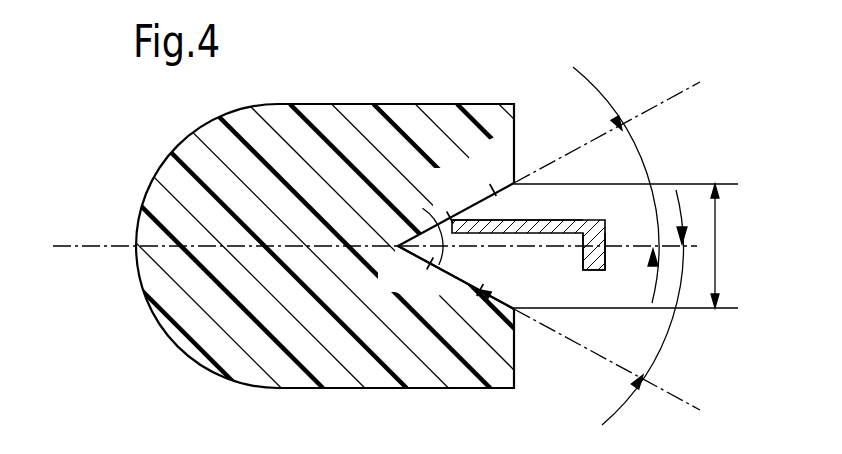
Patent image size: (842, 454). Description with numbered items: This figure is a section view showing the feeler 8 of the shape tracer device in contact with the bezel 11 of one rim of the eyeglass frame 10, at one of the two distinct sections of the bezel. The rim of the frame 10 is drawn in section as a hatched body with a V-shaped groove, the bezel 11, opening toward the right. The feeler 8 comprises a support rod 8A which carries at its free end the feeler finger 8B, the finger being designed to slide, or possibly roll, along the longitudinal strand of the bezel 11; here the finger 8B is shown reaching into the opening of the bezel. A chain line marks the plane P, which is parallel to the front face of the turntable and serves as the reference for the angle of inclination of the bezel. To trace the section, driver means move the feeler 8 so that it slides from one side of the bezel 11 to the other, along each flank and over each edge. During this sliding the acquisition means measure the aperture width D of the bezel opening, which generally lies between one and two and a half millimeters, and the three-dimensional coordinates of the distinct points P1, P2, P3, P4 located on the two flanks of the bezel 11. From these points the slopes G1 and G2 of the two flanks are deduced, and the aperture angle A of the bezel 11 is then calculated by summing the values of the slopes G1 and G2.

The eyeglass frame 10 is at (160, 327).
The bezel 11 is at (516, 311).
The feeler 8 is at (599, 214).
The support rod 8A is at (618, 258).
The feeler finger 8B is at (558, 216).
The plane P is at (87, 246).
The distinct point P1 is at (489, 172).
The distinct point P2 is at (400, 192).
The distinct point P3 is at (471, 306).
The distinct point P4 is at (429, 280).
The aperture angle A is at (440, 263).
The aperture width D is at (718, 232).
The slope of first flank G1 is at (597, 90).
The slope of second flank G2 is at (630, 394).